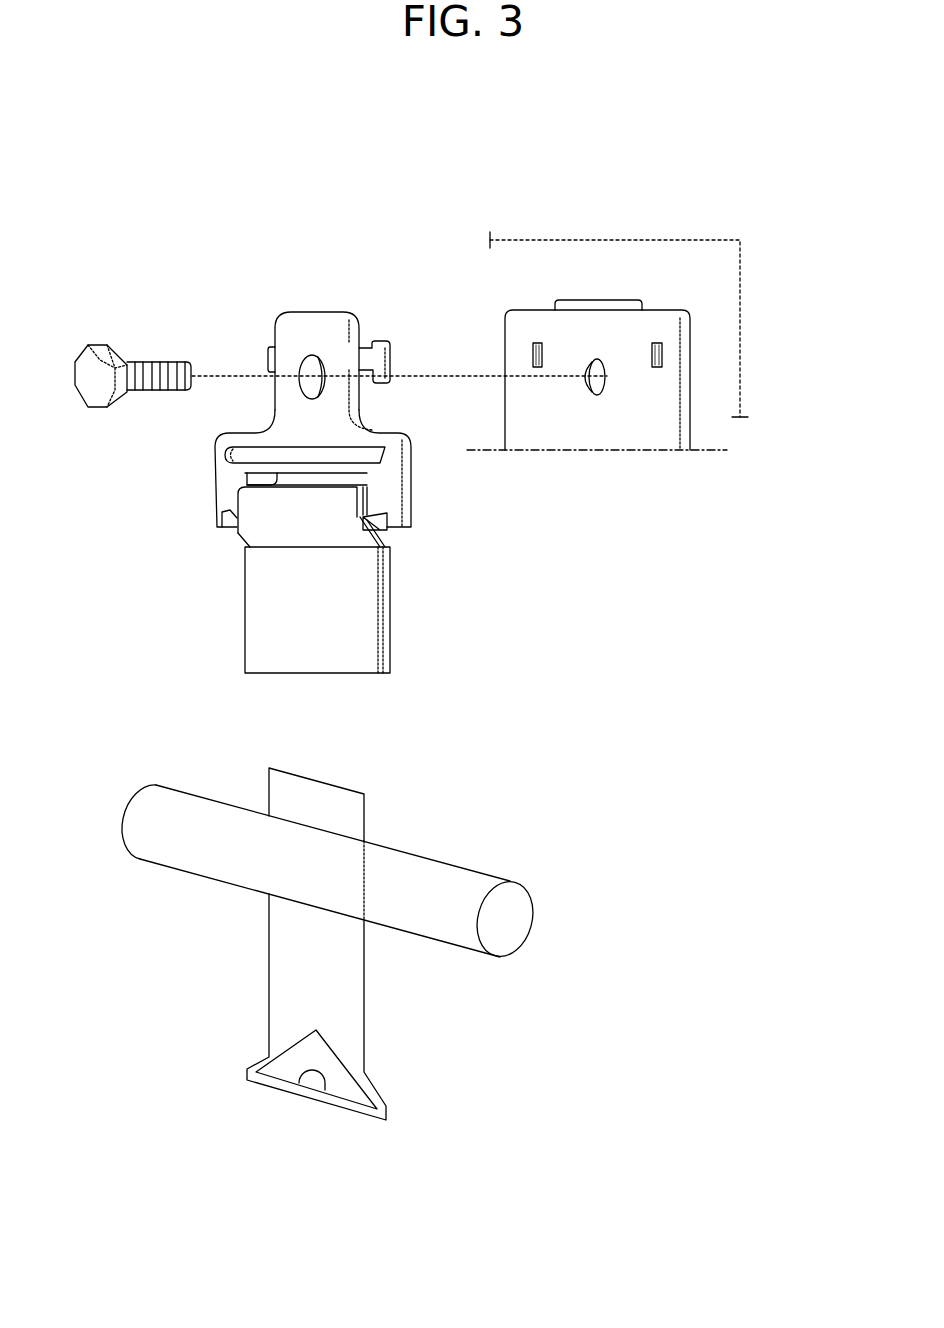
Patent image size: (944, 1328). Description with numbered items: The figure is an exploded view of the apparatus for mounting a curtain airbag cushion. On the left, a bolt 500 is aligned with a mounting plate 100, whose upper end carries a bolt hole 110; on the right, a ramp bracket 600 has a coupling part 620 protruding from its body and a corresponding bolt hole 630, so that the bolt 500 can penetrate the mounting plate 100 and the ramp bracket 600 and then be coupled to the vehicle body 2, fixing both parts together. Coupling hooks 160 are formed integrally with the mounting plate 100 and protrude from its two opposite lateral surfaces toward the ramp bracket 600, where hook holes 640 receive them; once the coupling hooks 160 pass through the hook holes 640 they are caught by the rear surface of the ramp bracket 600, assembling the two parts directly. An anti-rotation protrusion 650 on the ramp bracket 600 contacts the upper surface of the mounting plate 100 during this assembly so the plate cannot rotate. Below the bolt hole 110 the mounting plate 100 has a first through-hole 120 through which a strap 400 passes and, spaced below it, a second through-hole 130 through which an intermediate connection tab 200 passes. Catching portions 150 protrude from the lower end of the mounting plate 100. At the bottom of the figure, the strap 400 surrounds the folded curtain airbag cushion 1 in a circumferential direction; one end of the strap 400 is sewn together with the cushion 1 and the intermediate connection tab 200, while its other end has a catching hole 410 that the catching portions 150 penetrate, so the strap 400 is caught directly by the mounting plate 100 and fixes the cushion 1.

The curtain airbag cushion 1 is at (128, 820).
The vehicle body 2 is at (678, 268).
The mounting plate 100 is at (386, 484).
The bolt hole 110 is at (309, 355).
The first through-hole 120 is at (228, 453).
The second through-hole 130 is at (250, 480).
The catching portion 150 is at (225, 520).
The coupling hook 160 is at (270, 360).
The intermediate connection tab 200 is at (365, 615).
The strap 400 is at (385, 815).
The catching hole 410 is at (312, 1090).
The bolt 500 is at (96, 375).
The ramp bracket 600 is at (697, 377).
The coupling part 620 is at (603, 433).
The bolt hole 630 is at (597, 360).
The hook hole 640 is at (533, 360).
The anti-rotation protrusion 650 is at (570, 300).